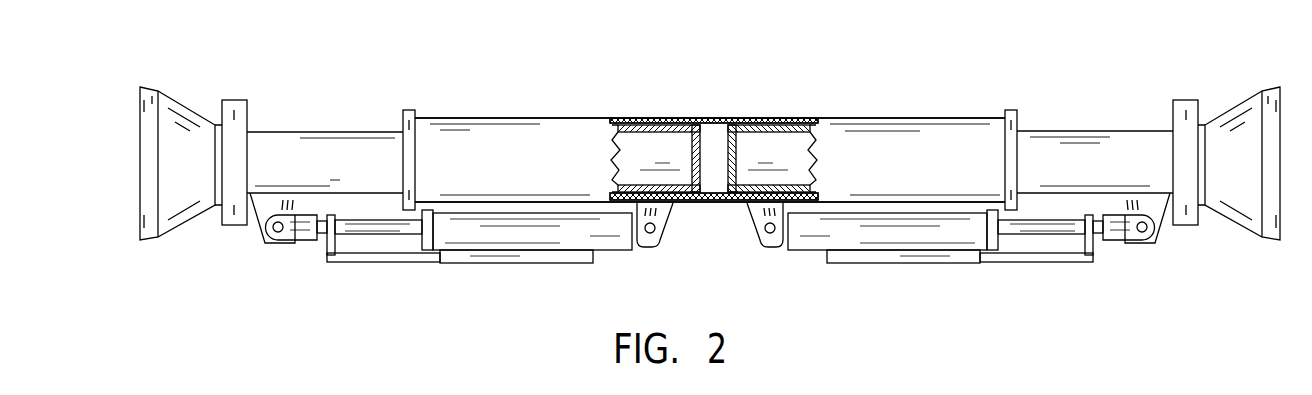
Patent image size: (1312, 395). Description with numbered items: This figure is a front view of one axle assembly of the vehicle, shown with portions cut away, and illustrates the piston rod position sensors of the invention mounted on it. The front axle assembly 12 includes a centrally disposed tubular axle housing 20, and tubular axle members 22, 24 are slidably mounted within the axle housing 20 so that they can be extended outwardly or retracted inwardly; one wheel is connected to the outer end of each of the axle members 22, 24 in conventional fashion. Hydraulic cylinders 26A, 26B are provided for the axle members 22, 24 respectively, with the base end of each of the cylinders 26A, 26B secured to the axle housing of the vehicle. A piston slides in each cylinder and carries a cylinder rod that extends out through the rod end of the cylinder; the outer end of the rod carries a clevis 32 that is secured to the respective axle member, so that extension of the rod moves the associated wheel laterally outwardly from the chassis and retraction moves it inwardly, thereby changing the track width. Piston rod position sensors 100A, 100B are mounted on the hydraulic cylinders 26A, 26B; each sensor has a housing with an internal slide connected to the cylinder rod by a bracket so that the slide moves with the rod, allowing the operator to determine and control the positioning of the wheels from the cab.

The front axle assembly 12 is at (732, 103).
The tubular axle housing 20 is at (908, 138).
The tubular axle member 22 is at (340, 120).
The tubular axle member 24 is at (1077, 148).
The hydraulic cylinder 26A is at (540, 230).
The hydraulic cylinder 26B is at (892, 230).
The clevis 32 is at (307, 233).
The piston rod position sensor 100A is at (480, 255).
The piston rod position sensor 100B is at (958, 252).